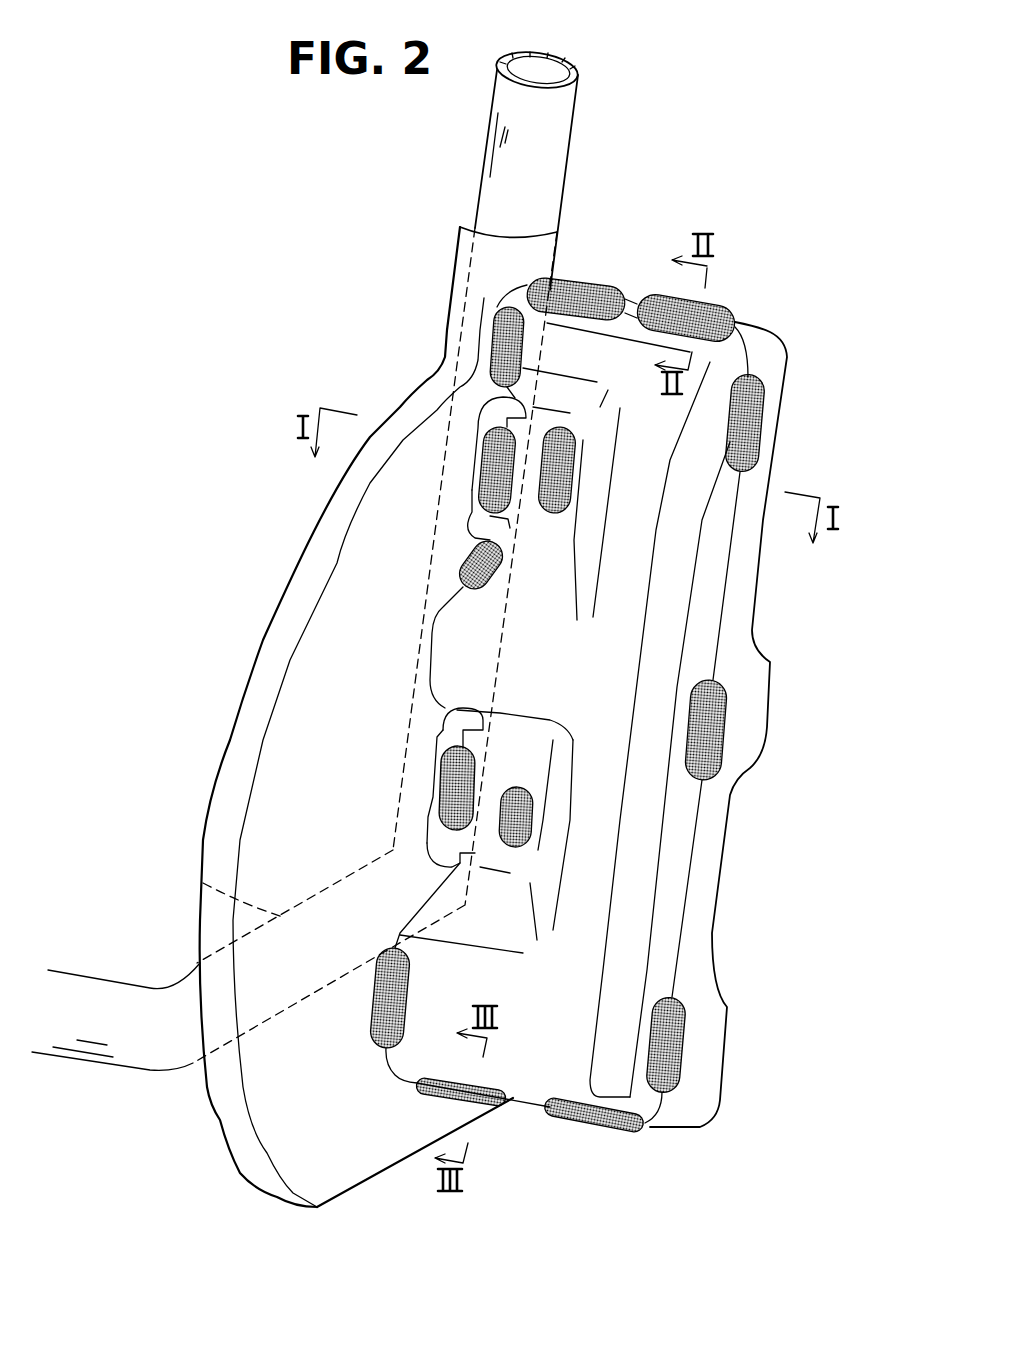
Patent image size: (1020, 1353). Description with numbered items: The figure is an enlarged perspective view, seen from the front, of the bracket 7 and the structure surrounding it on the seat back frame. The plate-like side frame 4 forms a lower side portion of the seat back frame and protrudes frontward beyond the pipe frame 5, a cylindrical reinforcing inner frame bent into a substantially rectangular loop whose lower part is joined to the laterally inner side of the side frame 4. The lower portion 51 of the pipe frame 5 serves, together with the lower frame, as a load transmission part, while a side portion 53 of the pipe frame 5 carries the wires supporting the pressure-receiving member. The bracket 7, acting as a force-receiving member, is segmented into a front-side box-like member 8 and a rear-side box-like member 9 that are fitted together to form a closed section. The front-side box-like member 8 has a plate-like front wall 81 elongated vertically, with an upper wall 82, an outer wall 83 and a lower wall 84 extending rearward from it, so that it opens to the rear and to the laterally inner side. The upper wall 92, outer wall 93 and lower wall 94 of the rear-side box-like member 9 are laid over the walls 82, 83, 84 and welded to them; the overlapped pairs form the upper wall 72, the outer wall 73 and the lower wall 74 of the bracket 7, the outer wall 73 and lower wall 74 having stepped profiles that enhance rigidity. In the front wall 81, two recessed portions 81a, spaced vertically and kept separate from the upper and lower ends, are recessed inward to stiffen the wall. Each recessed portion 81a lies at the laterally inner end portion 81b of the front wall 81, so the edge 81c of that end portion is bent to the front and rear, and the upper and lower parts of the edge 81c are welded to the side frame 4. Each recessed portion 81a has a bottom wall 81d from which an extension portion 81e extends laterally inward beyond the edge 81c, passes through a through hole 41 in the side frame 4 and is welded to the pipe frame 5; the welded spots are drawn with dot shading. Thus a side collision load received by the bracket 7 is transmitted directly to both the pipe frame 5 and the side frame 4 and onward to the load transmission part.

The side frame 4 is at (317, 1157).
The pipe frame 5 is at (578, 130).
The bracket 7 is at (767, 296).
The front-side box-like member 8 is at (680, 980).
The rear-side box-like member 9 is at (725, 1047).
The through hole 41 is at (493, 413).
The lower portion of pipe frame 51 is at (200, 877).
The side portion of pipe frame 53 is at (480, 167).
The upper elastic member pair 72 is at (631, 267).
The outer wall of bracket 73 is at (786, 587).
The lower wall of bracket 74 is at (600, 1165).
The front wall 81 is at (533, 1042).
The recessed portion 81a is at (547, 590).
The laterally inner end portion 81b is at (457, 637).
The edge 81c is at (425, 656).
The bottom wall 81d is at (560, 520).
The extension portion 81e is at (493, 520).
The upper wall 82 is at (595, 298).
The outer wall 83 is at (705, 607).
The lower wall 84 is at (545, 1115).
The upper wall 92 is at (683, 287).
The outer wall 93 is at (745, 567).
The lower wall 94 is at (658, 1127).